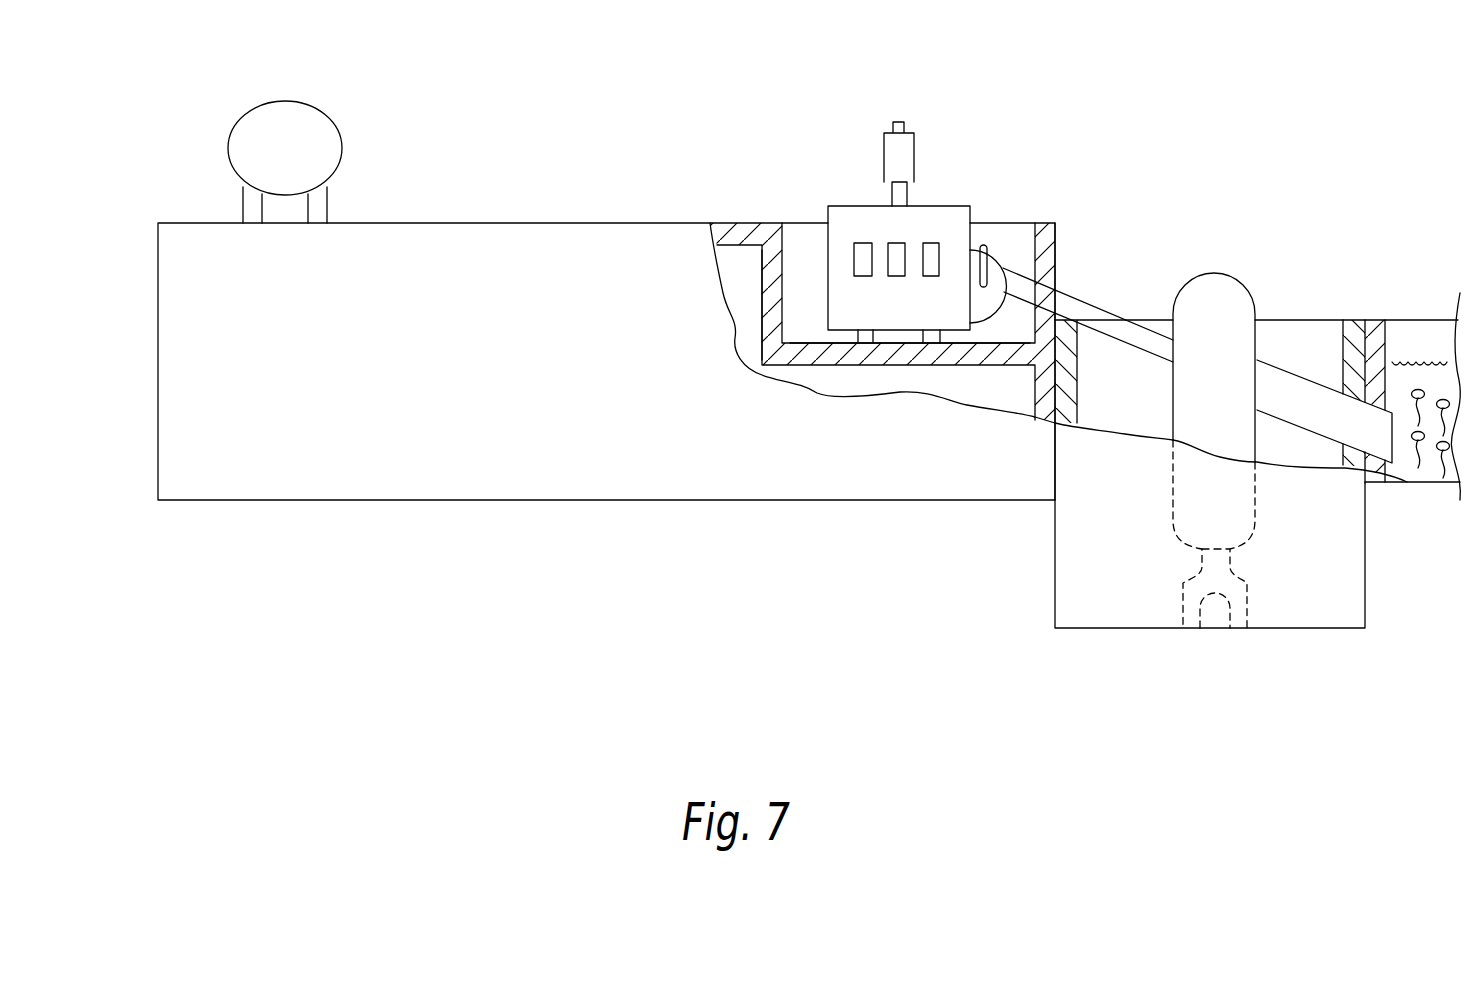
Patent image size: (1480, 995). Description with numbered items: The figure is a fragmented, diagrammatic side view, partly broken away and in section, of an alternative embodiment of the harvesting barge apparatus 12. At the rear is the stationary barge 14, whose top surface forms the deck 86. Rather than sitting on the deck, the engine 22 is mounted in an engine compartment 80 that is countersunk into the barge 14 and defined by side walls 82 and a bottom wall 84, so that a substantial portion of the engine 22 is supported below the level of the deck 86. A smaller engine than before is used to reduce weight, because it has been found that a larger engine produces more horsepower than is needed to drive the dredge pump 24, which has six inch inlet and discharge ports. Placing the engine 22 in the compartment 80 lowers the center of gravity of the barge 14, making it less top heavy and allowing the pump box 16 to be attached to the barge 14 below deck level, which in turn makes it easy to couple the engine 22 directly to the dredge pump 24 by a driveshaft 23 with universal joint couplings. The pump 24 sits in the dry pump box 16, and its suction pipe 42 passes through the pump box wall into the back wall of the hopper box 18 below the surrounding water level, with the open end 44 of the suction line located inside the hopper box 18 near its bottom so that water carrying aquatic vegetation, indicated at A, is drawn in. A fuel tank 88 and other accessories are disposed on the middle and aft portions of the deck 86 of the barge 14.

The barge apparatus 12 is at (761, 473).
The barge 14 is at (420, 435).
The pump box 16 is at (1132, 555).
The hopper box 18 is at (1418, 340).
The engine 22 is at (935, 206).
The driveshaft 23 is at (1083, 297).
The dredge pump 24 is at (1218, 272).
The suction pipe 42 is at (1307, 433).
The open end of pump suction line 44 is at (1395, 437).
The engine compartment 80 is at (839, 311).
The side walls 82 is at (763, 312).
The bottom wall 84 is at (823, 352).
The deck 86 is at (733, 222).
The fuel tank 88 is at (308, 127).
The organisms in fluid A is at (1443, 440).